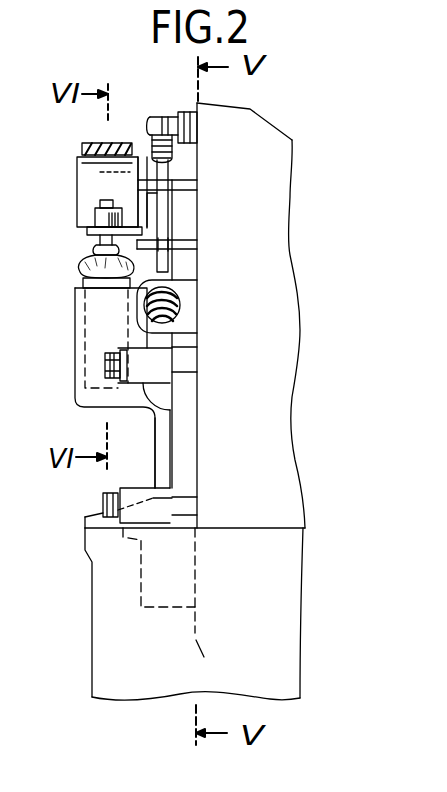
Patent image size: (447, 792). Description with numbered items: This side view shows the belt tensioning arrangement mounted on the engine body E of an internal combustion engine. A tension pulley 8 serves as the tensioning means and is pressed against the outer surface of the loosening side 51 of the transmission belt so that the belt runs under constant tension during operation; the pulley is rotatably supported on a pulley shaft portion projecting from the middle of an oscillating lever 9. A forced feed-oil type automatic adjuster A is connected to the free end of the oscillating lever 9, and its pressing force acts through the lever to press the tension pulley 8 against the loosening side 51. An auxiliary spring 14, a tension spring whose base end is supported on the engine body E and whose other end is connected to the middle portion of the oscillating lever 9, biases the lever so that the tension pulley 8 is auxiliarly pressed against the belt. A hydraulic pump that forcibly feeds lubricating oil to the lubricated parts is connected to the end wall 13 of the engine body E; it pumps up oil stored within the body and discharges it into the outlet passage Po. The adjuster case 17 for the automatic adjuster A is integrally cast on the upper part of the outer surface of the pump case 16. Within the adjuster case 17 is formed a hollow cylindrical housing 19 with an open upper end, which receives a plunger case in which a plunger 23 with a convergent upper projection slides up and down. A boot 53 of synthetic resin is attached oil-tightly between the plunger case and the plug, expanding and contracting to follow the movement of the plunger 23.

The tension pulley 8 is at (77, 190).
The oscillating lever 9 is at (164, 219).
The end wall 13 is at (192, 271).
The auxiliary spring 14 is at (152, 145).
The pump case 16 is at (156, 460).
The adjuster case 17 is at (130, 398).
The housing 19 is at (75, 340).
The plunger 23 is at (83, 288).
The loosening side of the transmission belt 51 is at (82, 148).
The boot 53 is at (80, 267).
The outlet passage Po is at (178, 303).
The forced feed-oil type automatic adjuster A is at (69, 379).
The engine body E is at (282, 113).